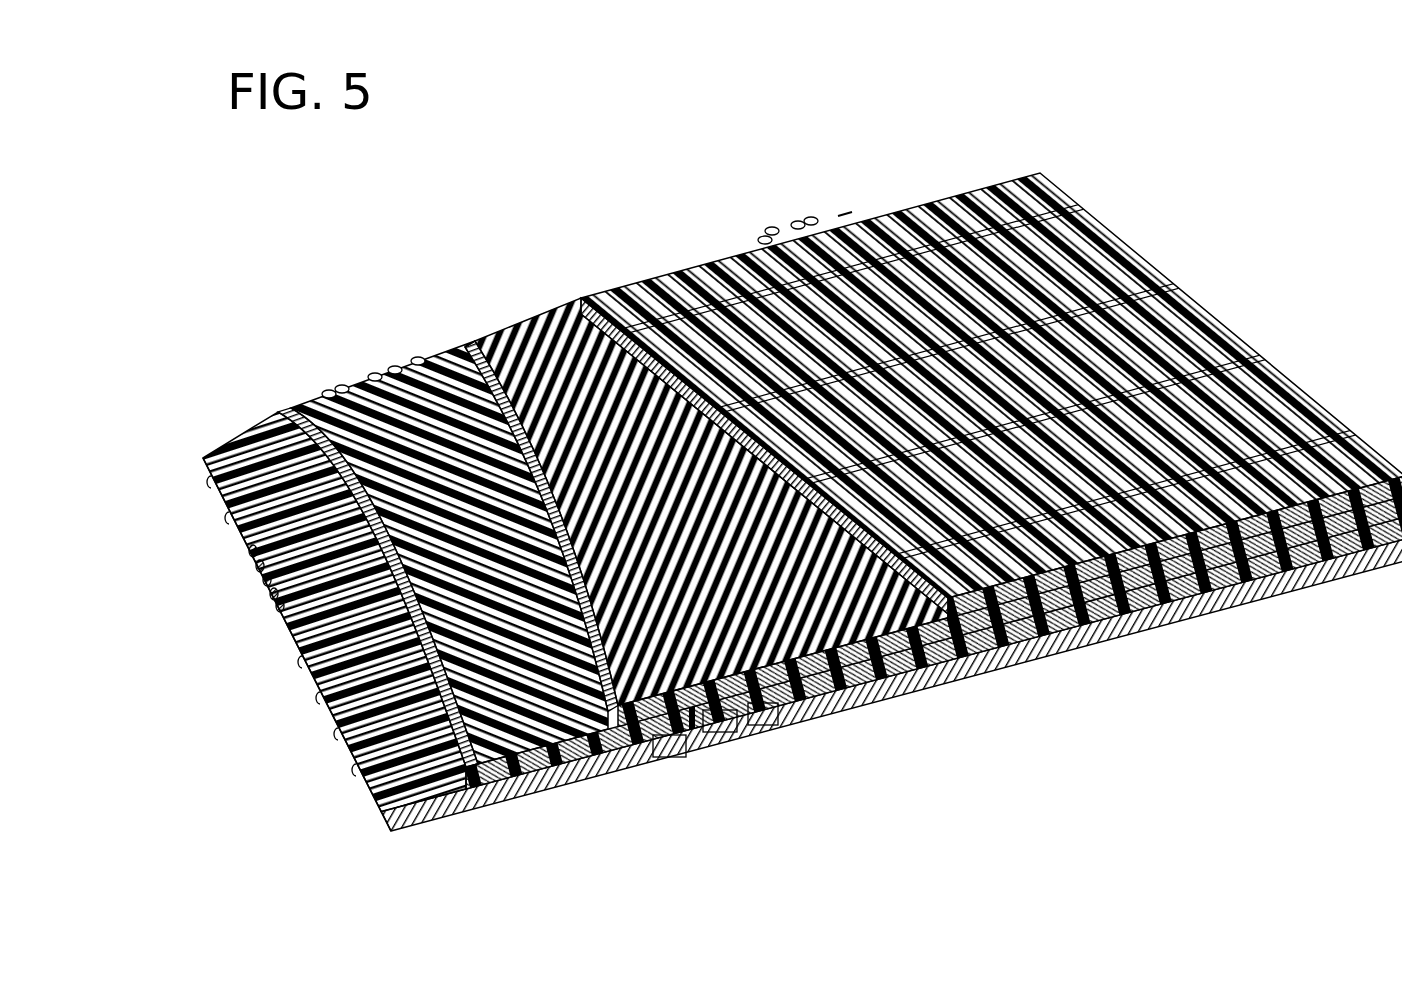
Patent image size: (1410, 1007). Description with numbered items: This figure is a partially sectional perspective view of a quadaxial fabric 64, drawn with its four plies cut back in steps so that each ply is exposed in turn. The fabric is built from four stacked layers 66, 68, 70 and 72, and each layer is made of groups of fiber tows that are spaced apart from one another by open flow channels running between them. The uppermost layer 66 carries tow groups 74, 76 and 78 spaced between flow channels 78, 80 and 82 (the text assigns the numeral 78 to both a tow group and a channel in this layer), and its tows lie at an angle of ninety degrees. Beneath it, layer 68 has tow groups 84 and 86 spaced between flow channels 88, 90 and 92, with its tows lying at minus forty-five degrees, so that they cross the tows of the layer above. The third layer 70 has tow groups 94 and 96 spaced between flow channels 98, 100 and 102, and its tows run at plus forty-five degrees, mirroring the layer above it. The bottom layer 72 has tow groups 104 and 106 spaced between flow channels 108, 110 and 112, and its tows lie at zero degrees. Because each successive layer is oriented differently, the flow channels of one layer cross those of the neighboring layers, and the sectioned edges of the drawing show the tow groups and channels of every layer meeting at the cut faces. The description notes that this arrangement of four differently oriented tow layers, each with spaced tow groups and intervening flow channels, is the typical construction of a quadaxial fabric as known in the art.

The quadaxial fabric 64 is at (933, 151).
The layer 66 is at (572, 291).
The layer 68 is at (481, 345).
The layer 70 is at (297, 417).
The layer 72 is at (197, 453).
The tow group 74 is at (801, 210).
The tow group 76 is at (760, 220).
The tow group / flow channel 78 is at (837, 206).
The flow channel 80 is at (787, 214).
The flow channel 82 is at (752, 230).
The tow group 84 is at (729, 725).
The tow group 86 is at (678, 749).
The flow channel 88 is at (748, 718).
The flow channel 90 is at (684, 700).
The flow channel 92 is at (617, 740).
The tow group 94 is at (330, 380).
The tow group 96 is at (385, 355).
The flow channel 98 is at (364, 367).
The flow channel 100 is at (410, 350).
The flow channel 102 is at (316, 386).
The tow group 104 is at (248, 558).
The tow group 106 is at (263, 587).
The flow channel 108 is at (241, 540).
The flow channel 110 is at (256, 572).
The flow channel 112 is at (270, 602).